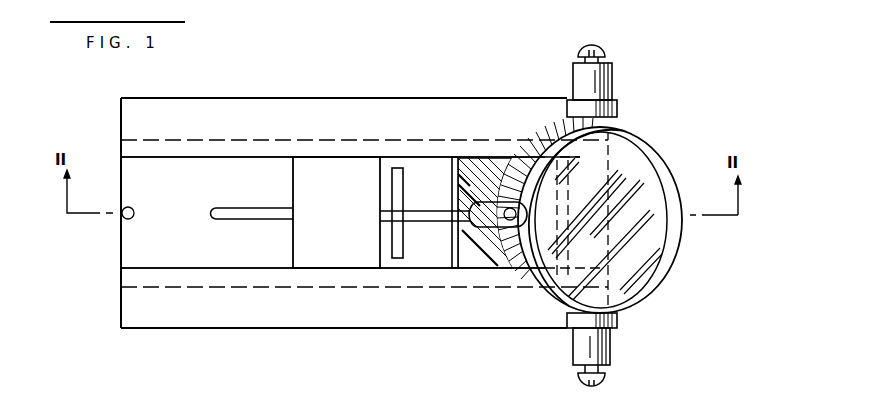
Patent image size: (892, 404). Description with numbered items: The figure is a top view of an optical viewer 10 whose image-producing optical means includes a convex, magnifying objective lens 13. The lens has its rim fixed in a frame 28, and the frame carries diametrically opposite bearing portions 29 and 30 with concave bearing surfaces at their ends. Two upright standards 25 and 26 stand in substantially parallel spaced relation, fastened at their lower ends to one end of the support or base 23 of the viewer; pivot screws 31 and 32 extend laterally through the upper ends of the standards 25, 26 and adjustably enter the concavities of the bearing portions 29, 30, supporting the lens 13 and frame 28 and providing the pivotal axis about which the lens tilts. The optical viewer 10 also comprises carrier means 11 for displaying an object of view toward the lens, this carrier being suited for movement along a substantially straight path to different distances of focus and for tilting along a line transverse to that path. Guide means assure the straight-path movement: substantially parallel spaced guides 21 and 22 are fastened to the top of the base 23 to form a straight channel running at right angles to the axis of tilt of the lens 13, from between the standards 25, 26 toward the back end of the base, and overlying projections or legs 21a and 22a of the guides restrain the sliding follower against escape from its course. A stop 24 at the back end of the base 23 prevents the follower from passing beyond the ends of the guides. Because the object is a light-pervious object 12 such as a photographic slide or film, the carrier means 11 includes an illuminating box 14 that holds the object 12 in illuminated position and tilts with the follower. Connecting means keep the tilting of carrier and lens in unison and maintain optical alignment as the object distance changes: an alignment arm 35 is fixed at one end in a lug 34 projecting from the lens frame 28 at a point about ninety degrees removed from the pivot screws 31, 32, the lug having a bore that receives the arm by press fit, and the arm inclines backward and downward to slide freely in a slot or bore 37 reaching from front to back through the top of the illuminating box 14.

The optical viewer 10 is at (459, 86).
The carrier means 11 is at (345, 172).
The light-pervious object 12 is at (488, 168).
The objective lens 13 is at (613, 162).
The illuminating box 14 is at (453, 184).
The guide 21 is at (197, 287).
The overlying projection or leg 21a is at (253, 268).
The guide 22 is at (203, 141).
The overlying projection or leg 22a is at (250, 158).
The base 23 is at (360, 329).
The stop 24 is at (126, 219).
The standard 25 is at (612, 347).
The standard 26 is at (613, 82).
The lens frame 28 is at (672, 265).
The bearing portion 29 is at (618, 322).
The bearing portion 30 is at (618, 108).
The pivot screw 31 is at (602, 376).
The pivot screw 32 is at (603, 55).
The lug 34 is at (497, 250).
The alignment arm 35 is at (430, 222).
The slot or bore 37 is at (404, 193).